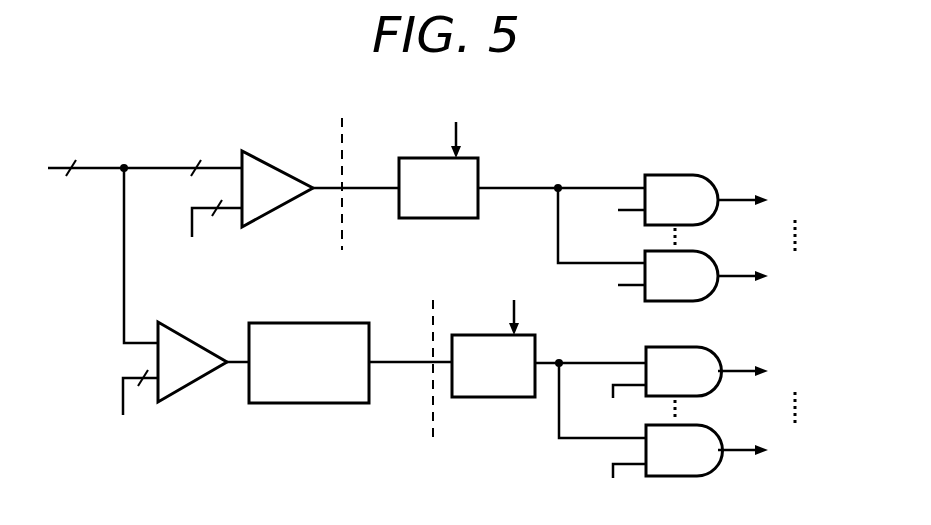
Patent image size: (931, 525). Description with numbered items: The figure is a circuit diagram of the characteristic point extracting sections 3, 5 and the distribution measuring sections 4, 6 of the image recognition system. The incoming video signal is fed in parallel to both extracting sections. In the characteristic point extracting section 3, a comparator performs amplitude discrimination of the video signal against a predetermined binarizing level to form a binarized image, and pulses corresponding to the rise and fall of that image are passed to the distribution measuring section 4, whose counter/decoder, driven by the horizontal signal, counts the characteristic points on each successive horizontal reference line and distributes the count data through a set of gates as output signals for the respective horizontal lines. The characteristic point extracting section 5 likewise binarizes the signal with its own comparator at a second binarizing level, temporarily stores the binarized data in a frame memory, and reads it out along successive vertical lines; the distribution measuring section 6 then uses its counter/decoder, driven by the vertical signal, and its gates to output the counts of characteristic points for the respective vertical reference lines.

The characteristic point extracting section 3 is at (327, 151).
The distribution measuring section 4 is at (377, 151).
The characteristic point extracting section 5 is at (417, 325).
The distribution measuring section 6 is at (472, 325).